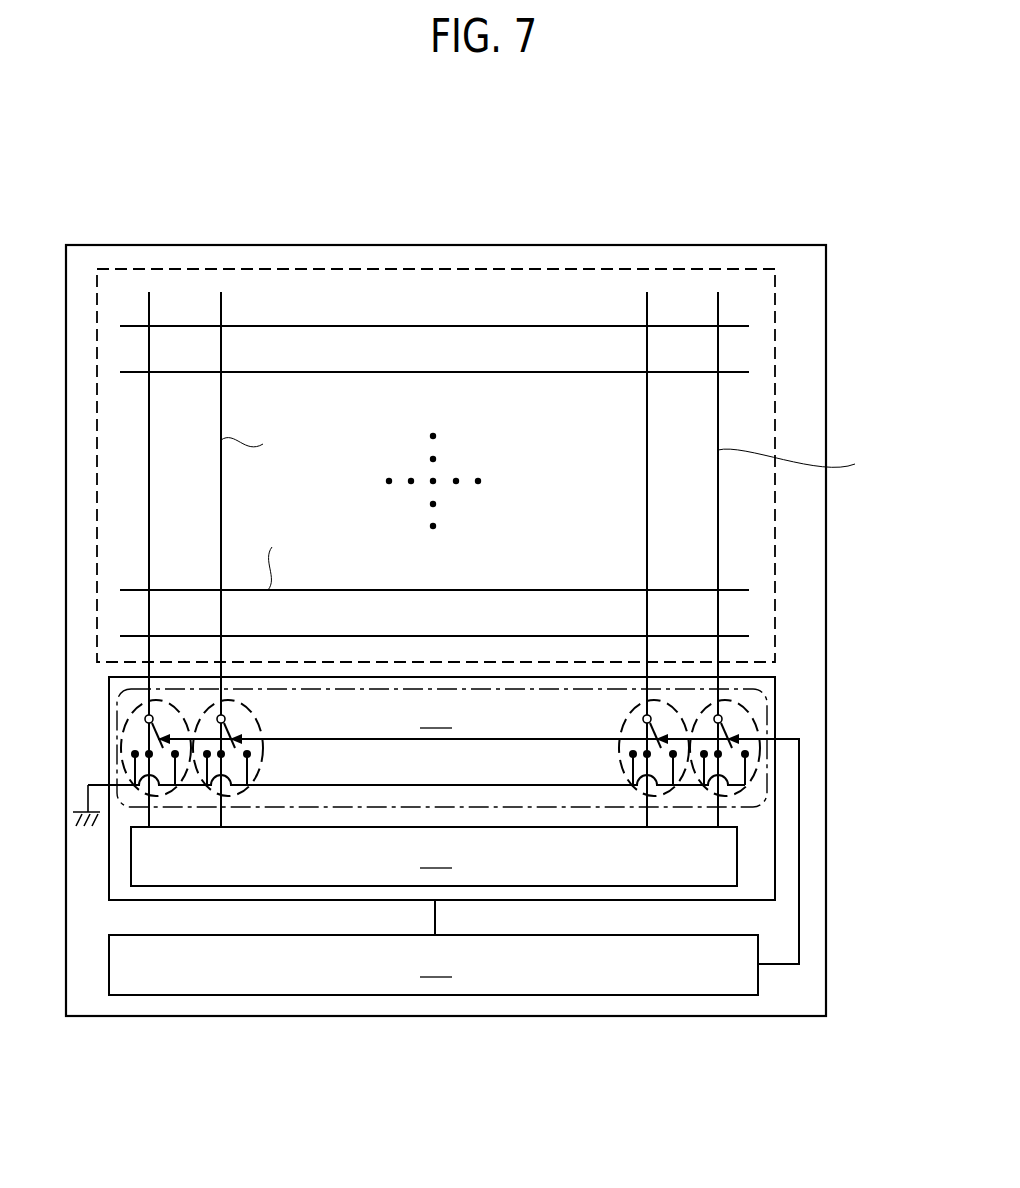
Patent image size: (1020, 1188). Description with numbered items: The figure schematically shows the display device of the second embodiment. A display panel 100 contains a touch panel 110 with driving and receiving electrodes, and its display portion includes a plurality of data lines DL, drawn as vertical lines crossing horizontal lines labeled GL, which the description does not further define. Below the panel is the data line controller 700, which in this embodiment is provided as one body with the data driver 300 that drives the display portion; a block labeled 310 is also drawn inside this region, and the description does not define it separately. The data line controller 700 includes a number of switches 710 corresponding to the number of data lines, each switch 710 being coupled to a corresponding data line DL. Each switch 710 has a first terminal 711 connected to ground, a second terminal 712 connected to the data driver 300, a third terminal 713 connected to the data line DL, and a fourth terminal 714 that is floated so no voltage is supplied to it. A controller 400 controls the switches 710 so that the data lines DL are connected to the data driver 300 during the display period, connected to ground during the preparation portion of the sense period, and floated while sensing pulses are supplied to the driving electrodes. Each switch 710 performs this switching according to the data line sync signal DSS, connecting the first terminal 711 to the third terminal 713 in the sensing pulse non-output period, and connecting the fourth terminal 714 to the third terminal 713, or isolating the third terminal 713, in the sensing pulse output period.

The display panel 100 is at (548, 244).
The touch panel 110 is at (491, 434).
The data driver 300 is at (482, 790).
The data driver 310 is at (434, 856).
The controller 400 is at (433, 965).
The data line controller 700 is at (757, 689).
The switch 710 is at (737, 702).
The first terminal 711 is at (748, 757).
The second terminal 712 is at (705, 770).
The third terminal 713 is at (723, 722).
The fourth terminal 714 is at (748, 788).
The data line DL is at (553, 452).
The gate line GL is at (268, 556).
The data line sync signal DSS is at (792, 982).